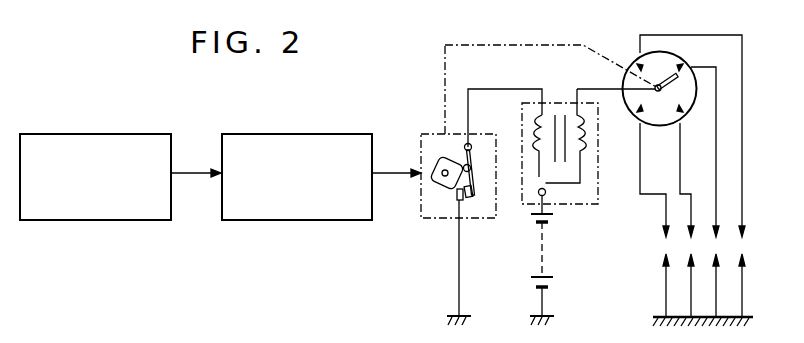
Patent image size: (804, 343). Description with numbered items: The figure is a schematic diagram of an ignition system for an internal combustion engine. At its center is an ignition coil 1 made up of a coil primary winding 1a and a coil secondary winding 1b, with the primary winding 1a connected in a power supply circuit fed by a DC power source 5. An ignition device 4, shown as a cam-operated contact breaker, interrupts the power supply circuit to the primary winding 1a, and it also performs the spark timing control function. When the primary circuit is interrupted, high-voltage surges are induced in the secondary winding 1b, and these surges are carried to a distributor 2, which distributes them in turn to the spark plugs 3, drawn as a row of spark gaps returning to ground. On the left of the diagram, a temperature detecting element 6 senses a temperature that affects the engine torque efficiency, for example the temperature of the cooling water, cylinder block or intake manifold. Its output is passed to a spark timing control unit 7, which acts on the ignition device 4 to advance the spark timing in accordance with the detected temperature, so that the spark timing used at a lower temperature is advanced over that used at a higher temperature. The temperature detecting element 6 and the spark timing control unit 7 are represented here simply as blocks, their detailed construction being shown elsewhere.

The ignition coil 1 is at (573, 204).
The coil primary winding 1a is at (536, 118).
The coil secondary winding 1b is at (587, 128).
The distributor 2 is at (660, 52).
The spark plugs 3 is at (665, 246).
The ignition device 4 is at (470, 218).
The DC power source 5 is at (543, 243).
The temperature detecting element 6 is at (95, 134).
The spark timing control unit 7 is at (301, 134).